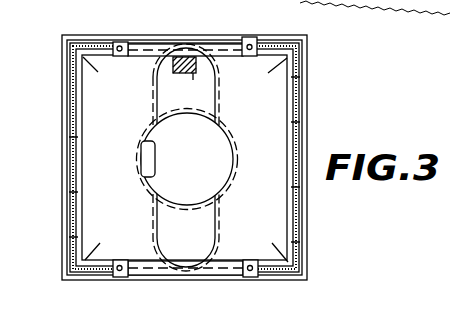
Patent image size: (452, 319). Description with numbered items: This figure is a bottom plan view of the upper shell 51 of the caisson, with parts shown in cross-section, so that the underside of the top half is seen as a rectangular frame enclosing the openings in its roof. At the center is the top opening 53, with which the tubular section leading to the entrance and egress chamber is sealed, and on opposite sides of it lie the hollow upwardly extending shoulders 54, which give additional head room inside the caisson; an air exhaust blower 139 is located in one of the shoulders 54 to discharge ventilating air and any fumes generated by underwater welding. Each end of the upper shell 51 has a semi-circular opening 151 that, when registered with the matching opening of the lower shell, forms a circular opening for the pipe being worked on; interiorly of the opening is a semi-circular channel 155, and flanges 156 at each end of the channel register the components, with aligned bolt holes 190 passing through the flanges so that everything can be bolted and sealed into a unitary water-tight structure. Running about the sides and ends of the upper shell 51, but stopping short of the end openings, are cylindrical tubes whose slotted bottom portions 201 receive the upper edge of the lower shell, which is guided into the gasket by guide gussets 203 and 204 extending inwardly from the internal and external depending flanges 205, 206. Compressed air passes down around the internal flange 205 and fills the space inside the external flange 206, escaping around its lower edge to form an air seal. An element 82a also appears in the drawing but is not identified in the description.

The upper shell 51 is at (55, 56).
The flange 156 is at (126, 40).
The semi-circular opening 151 is at (159, 43).
The semi-circular channel 155 is at (226, 43).
The bolt holes 190 is at (251, 39).
The slotted bottom portion 201 is at (300, 84).
The external depending flange 206 is at (62, 108).
The internal depending flange 205 is at (83, 117).
The guide gusset 204 is at (72, 137).
The guide gusset 203 is at (77, 142).
The air exhaust blower 139 is at (184, 79).
The hollow upwardly extending shoulder 54 is at (220, 86).
The top opening 53 is at (229, 145).
The handle 82a is at (155, 158).